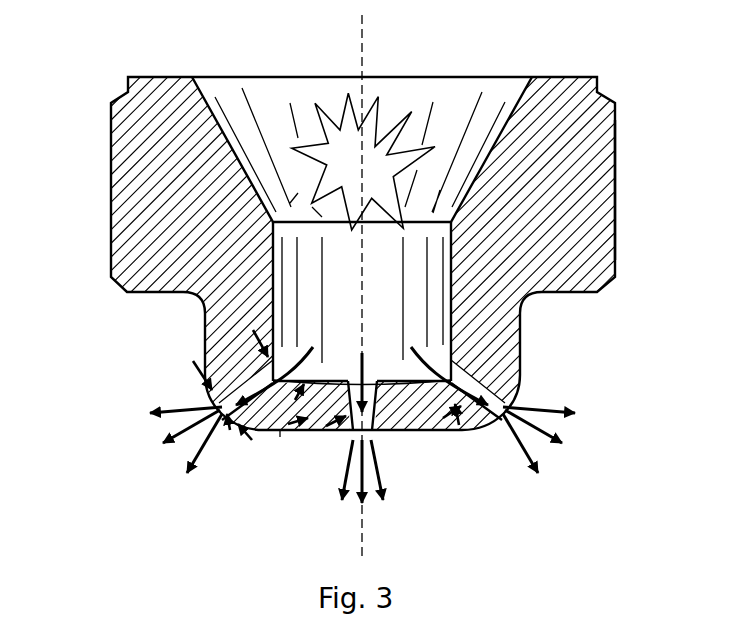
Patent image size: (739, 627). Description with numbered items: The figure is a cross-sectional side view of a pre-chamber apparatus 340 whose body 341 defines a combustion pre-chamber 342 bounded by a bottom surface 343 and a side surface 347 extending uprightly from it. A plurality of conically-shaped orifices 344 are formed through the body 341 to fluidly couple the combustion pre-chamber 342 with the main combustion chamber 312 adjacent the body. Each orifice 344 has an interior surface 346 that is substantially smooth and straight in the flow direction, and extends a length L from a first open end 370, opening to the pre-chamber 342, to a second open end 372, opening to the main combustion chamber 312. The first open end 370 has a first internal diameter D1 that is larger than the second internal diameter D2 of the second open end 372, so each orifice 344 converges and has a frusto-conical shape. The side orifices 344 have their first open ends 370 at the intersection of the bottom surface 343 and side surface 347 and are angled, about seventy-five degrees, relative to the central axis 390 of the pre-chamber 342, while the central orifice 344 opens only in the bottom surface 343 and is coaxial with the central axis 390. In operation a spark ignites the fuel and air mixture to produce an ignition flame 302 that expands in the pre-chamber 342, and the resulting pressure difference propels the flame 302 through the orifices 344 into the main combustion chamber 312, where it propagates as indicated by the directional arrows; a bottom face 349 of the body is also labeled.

The ignition flame 302 is at (343, 92).
The main combustion chamber 312 is at (433, 457).
The pre-chamber apparatus 340 is at (552, 112).
The body 341 is at (600, 152).
The combustion pre-chamber 342 is at (385, 282).
The bottom surface 343 is at (400, 368).
The orifices 344 is at (229, 418).
The interior surfaces 346 is at (232, 398).
The side surface 347 is at (283, 247).
The bottom face 349 is at (448, 434).
The first open end 370 is at (562, 328).
The second open end 372 is at (148, 420).
The central axis 390 is at (366, 46).
The first internal diameter D1 is at (252, 344).
The second internal diameter D2 is at (190, 366).
The length L is at (280, 437).